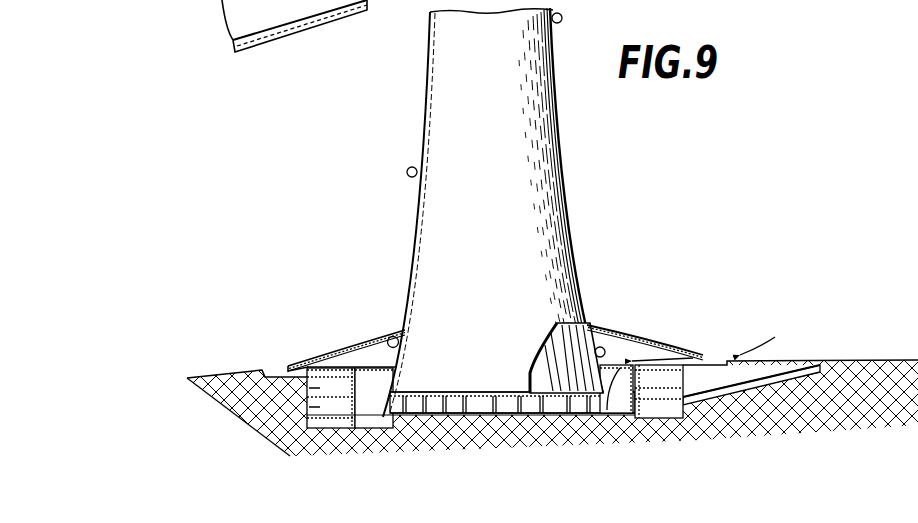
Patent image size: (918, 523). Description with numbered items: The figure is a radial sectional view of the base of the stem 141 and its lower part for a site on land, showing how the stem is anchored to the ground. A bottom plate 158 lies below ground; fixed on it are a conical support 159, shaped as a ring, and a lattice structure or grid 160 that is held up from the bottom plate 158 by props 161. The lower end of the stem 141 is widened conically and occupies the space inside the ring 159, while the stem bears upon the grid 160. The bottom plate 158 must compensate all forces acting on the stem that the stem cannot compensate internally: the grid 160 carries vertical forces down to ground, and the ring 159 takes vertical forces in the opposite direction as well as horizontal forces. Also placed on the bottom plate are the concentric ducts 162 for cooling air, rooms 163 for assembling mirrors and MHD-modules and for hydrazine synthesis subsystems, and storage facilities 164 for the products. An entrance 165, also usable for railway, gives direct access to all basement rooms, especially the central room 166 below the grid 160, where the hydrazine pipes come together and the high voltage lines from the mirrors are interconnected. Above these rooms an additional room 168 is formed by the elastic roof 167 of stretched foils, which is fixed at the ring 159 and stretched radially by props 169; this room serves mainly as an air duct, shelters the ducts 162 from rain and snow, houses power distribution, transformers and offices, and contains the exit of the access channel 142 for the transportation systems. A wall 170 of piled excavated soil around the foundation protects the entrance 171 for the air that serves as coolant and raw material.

The stem 141 is at (440, 116).
The access channel 142 is at (603, 346).
The bottom plate 158 is at (600, 410).
The conical support 159 is at (395, 330).
The lattice structure 160 is at (495, 435).
The props 161 is at (512, 410).
The concentric ducts 162 is at (370, 408).
The rooms 163 is at (305, 408).
The storage facilities 164 is at (660, 398).
The entrance 165 is at (766, 383).
The central room 166 is at (437, 410).
The elastic roof 167 is at (382, 347).
The additional room 168 is at (342, 353).
The props 169 is at (693, 357).
The wall 170 is at (770, 367).
The entrance for the air 171 is at (282, 372).